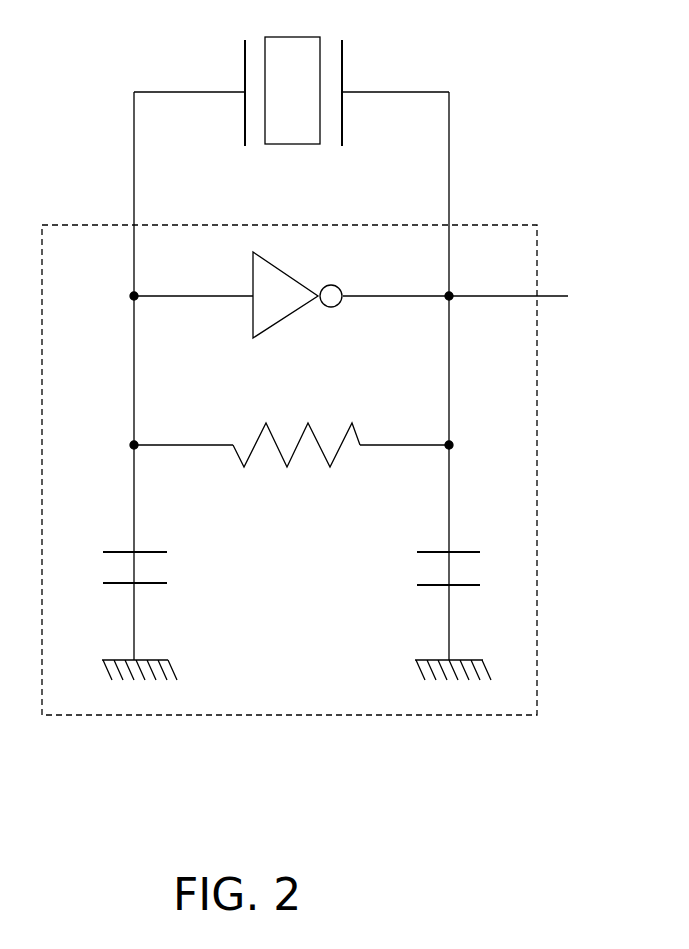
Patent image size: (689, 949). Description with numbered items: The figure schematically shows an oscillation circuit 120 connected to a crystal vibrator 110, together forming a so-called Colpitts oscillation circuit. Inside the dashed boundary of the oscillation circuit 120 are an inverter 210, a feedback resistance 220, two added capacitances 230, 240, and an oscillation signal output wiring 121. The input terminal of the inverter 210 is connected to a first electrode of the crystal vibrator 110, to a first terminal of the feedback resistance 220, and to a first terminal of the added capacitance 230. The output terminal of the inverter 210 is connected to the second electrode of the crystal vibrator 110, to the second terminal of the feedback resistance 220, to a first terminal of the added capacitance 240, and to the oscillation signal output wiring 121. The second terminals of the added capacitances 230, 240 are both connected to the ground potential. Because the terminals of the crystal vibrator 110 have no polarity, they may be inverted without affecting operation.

The crystal vibrator 110 is at (245, 72).
The oscillation circuit 120 is at (88, 224).
The oscillation signal output wiring 121 is at (555, 294).
The inverter 210 is at (253, 275).
The feedback resistance 220 is at (262, 426).
The added capacitance 230 is at (115, 551).
The added capacitance 240 is at (431, 551).